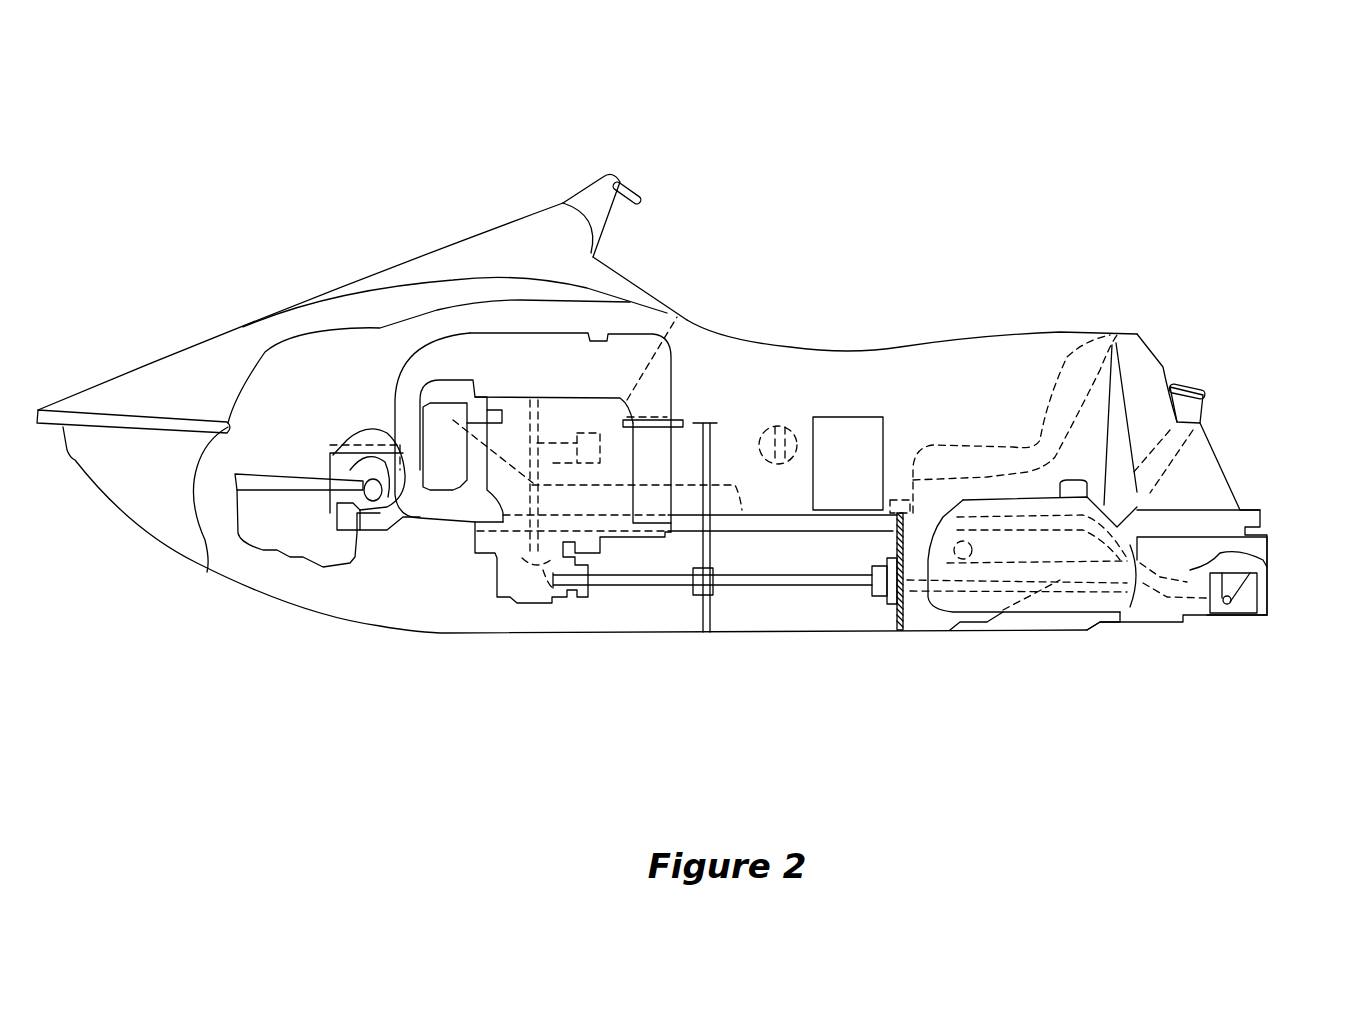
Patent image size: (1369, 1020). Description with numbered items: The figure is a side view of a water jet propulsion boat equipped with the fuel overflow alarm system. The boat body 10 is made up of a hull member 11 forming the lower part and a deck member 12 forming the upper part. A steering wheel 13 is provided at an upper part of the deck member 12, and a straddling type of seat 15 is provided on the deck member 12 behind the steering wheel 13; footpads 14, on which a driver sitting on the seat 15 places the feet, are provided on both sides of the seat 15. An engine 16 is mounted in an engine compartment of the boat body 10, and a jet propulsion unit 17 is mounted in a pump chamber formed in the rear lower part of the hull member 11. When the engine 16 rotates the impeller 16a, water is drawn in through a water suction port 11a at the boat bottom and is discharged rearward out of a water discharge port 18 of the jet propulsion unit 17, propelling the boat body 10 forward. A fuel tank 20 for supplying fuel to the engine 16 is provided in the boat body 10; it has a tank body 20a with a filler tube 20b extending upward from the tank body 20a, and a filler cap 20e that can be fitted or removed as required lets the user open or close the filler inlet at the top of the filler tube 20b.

The boat body 10 is at (753, 263).
The hull member 11 is at (970, 630).
The water suction port 11a is at (1013, 630).
The deck member 12 is at (388, 265).
The steering wheel 13 is at (630, 187).
The footpads 14 is at (797, 513).
The seat 15 is at (888, 347).
The engine 16 is at (513, 605).
The impeller 16a is at (1152, 590).
The jet propulsion unit 17 is at (1122, 610).
The water discharge port 18 is at (1250, 595).
The fuel tank 20 is at (1065, 613).
The tank body 20a is at (1015, 497).
The filler tube 20b is at (1118, 500).
The filler cap 20e is at (1198, 388).